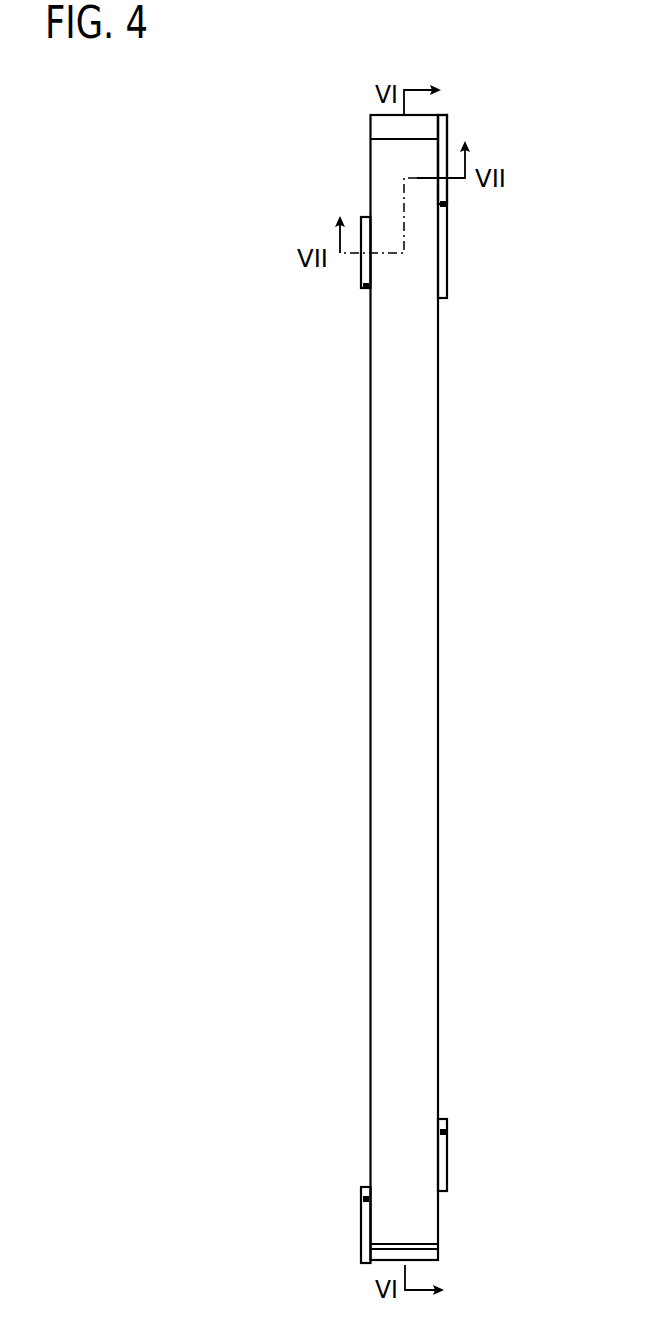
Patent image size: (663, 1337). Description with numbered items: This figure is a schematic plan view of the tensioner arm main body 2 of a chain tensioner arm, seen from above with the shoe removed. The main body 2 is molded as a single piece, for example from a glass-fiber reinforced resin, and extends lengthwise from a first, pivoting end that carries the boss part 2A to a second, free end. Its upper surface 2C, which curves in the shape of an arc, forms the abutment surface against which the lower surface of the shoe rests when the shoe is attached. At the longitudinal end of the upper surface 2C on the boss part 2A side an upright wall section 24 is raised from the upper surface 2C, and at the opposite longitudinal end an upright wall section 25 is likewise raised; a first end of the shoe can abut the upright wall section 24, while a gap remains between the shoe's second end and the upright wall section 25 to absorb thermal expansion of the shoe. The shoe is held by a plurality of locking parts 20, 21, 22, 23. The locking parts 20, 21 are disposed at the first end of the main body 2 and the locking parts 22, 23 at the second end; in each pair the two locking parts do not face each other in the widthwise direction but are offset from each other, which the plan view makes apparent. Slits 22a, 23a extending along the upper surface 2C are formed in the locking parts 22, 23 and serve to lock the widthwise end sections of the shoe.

The tensioner arm main body 2 is at (405, 698).
The boss part 2A is at (443, 270).
The upper surface 2C is at (428, 613).
The locking part 20 is at (362, 270).
The locking part 21 is at (445, 128).
The locking part 22 is at (365, 1234).
The slit 22a is at (366, 1199).
The locking part 23 is at (445, 1153).
The slit 23a is at (440, 1131).
The upright wall section 24 is at (375, 128).
The upright wall section 25 is at (435, 1255).